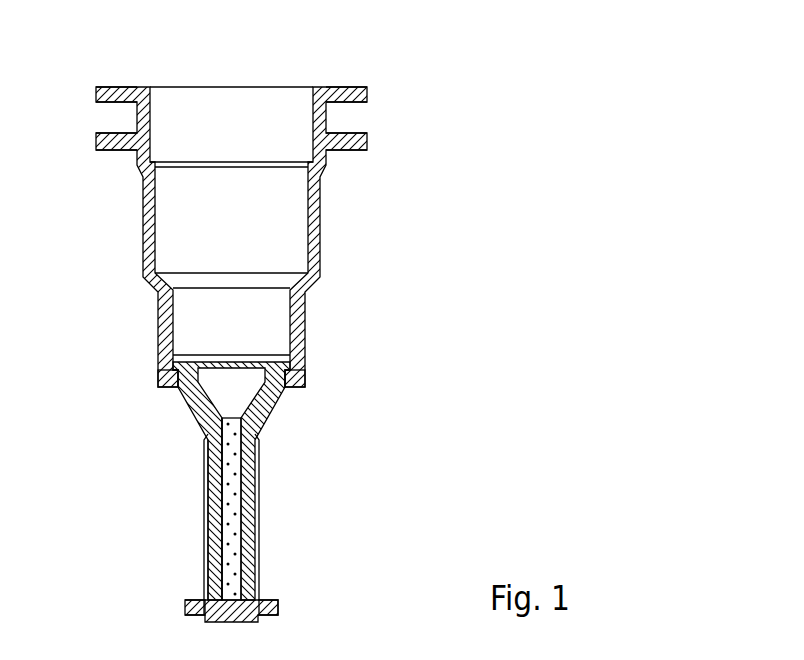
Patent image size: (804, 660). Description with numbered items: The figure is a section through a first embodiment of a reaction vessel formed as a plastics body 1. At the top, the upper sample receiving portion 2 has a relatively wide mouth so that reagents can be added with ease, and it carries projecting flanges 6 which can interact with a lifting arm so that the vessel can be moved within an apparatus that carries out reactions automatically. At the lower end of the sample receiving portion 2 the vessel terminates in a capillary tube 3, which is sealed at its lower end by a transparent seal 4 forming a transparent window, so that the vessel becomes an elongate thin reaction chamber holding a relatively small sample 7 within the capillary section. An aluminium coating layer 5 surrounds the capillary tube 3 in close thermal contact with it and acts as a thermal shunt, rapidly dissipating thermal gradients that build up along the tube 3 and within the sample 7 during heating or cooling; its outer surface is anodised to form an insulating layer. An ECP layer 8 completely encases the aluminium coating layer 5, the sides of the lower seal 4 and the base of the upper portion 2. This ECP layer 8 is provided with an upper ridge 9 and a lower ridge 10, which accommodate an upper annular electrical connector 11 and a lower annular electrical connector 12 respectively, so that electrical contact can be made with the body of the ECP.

The plastics body 1 is at (372, 219).
The upper sample receiving portion 2 is at (305, 330).
The capillary tube 3 is at (252, 511).
The transparent seal 4 is at (245, 621).
The aluminium coating layer 5 is at (217, 543).
The projecting flanges 6 is at (367, 142).
The sample 7 is at (235, 463).
The ECP layer 8 is at (205, 496).
The upper ridge 9 is at (305, 374).
The lower ridge 10 is at (262, 600).
The upper annular electrical connector 11 is at (158, 386).
The lower annular electrical connector 12 is at (185, 606).